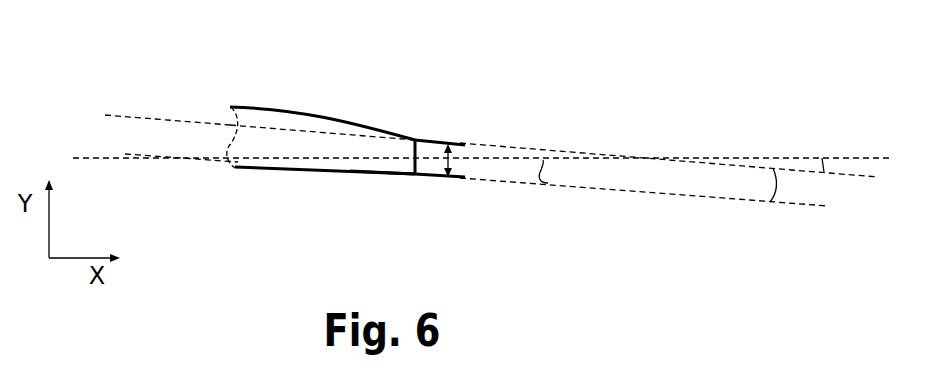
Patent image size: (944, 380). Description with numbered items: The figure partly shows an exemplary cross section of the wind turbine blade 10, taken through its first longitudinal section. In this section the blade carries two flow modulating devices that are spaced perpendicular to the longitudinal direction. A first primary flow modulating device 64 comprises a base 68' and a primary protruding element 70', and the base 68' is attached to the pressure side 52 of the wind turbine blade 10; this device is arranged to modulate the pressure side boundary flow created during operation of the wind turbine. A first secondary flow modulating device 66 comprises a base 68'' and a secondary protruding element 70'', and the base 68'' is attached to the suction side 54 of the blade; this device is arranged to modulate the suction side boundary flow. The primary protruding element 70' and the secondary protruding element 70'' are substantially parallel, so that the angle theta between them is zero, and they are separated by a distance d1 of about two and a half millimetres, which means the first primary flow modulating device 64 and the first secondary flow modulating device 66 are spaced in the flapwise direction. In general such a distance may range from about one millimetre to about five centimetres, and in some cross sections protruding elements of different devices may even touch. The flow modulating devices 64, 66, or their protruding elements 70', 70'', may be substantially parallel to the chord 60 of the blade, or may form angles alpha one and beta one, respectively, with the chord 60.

The wind turbine blade 10 is at (208, 109).
The pressure side 52 is at (277, 165).
The suction side 54 is at (288, 110).
The chord 60 is at (277, 165).
The first primary flow modulating device 64 is at (423, 176).
The first secondary flow modulating device 66 is at (413, 140).
The base 68' is at (359, 216).
The base 68'' is at (414, 98).
The primary protruding element 70' is at (638, 211).
The secondary protruding element 70'' is at (669, 127).
The distance d1 is at (447, 142).